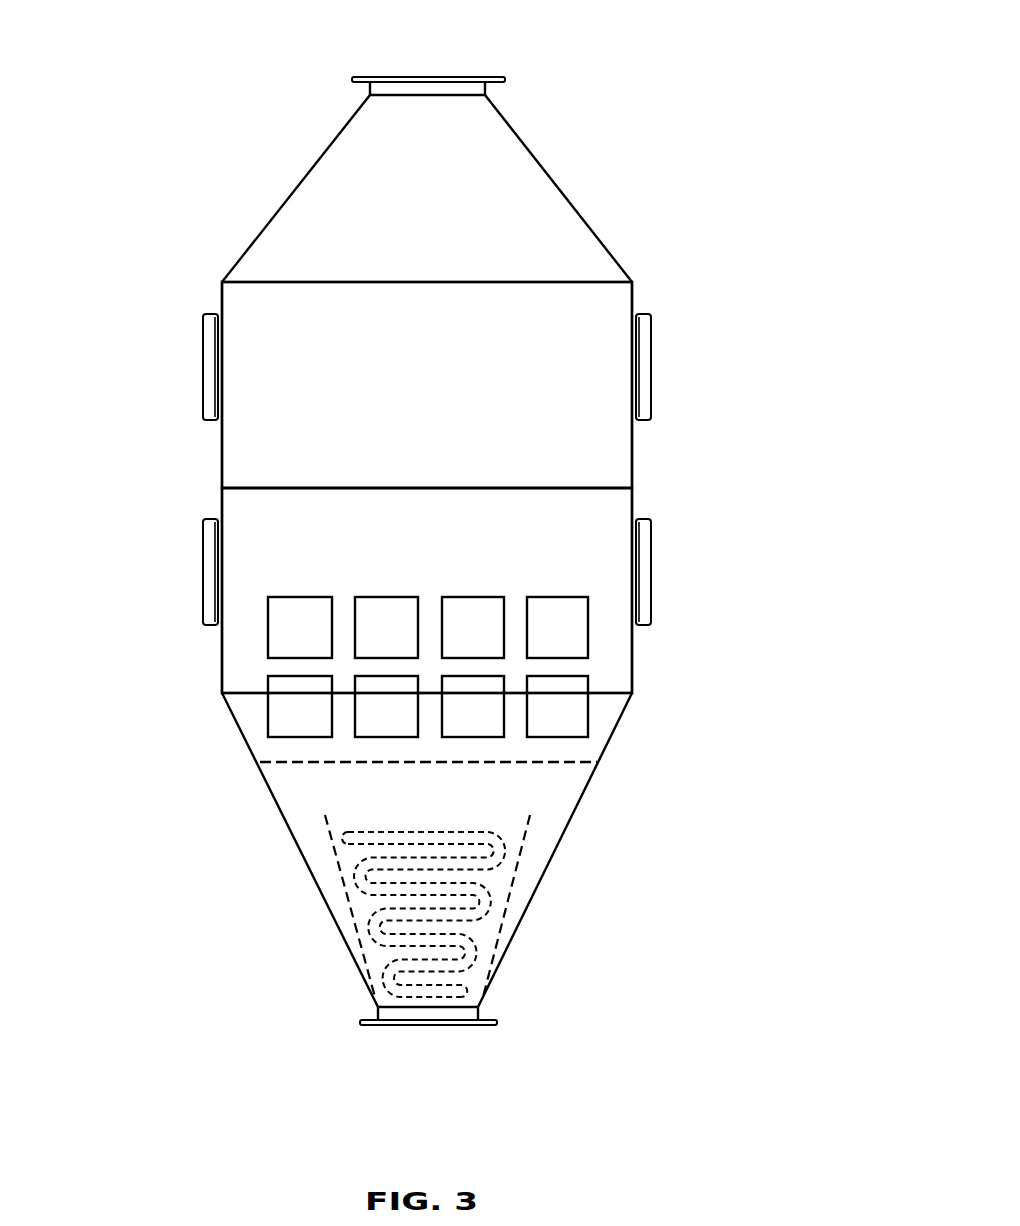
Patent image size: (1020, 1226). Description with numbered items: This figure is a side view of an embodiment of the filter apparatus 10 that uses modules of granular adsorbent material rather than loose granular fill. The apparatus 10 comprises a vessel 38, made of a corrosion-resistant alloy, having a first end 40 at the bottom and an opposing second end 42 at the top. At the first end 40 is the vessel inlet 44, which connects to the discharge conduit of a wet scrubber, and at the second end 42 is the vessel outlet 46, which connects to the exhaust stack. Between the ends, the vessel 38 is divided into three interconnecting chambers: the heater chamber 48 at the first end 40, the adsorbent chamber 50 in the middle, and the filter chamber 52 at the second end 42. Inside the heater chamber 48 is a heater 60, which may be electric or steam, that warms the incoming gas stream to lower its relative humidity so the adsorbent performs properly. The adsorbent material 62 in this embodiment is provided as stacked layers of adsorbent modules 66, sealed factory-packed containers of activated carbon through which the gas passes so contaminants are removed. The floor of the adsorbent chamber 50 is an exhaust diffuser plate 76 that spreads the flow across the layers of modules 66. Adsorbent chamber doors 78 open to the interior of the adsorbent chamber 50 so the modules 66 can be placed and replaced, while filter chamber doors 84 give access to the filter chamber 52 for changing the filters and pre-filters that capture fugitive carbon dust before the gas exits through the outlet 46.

The apparatus 10 is at (389, 401).
The second end 42 is at (548, 148).
The vessel outlet 46 is at (364, 62).
The filter chamber 52 is at (597, 442).
The adsorbent chamber 50 is at (257, 502).
The vessel 38 is at (648, 498).
The filter chamber doors 84 is at (205, 371).
The adsorbent chamber doors 78 is at (207, 590).
The adsorbent material 62 is at (608, 578).
The adsorbent modules 66 is at (568, 718).
The exhaust diffuser plate 76 is at (291, 775).
The heater chamber 48 is at (558, 795).
The first end 40 is at (523, 968).
The heater 60 is at (348, 907).
The vessel inlet 44 is at (487, 1040).